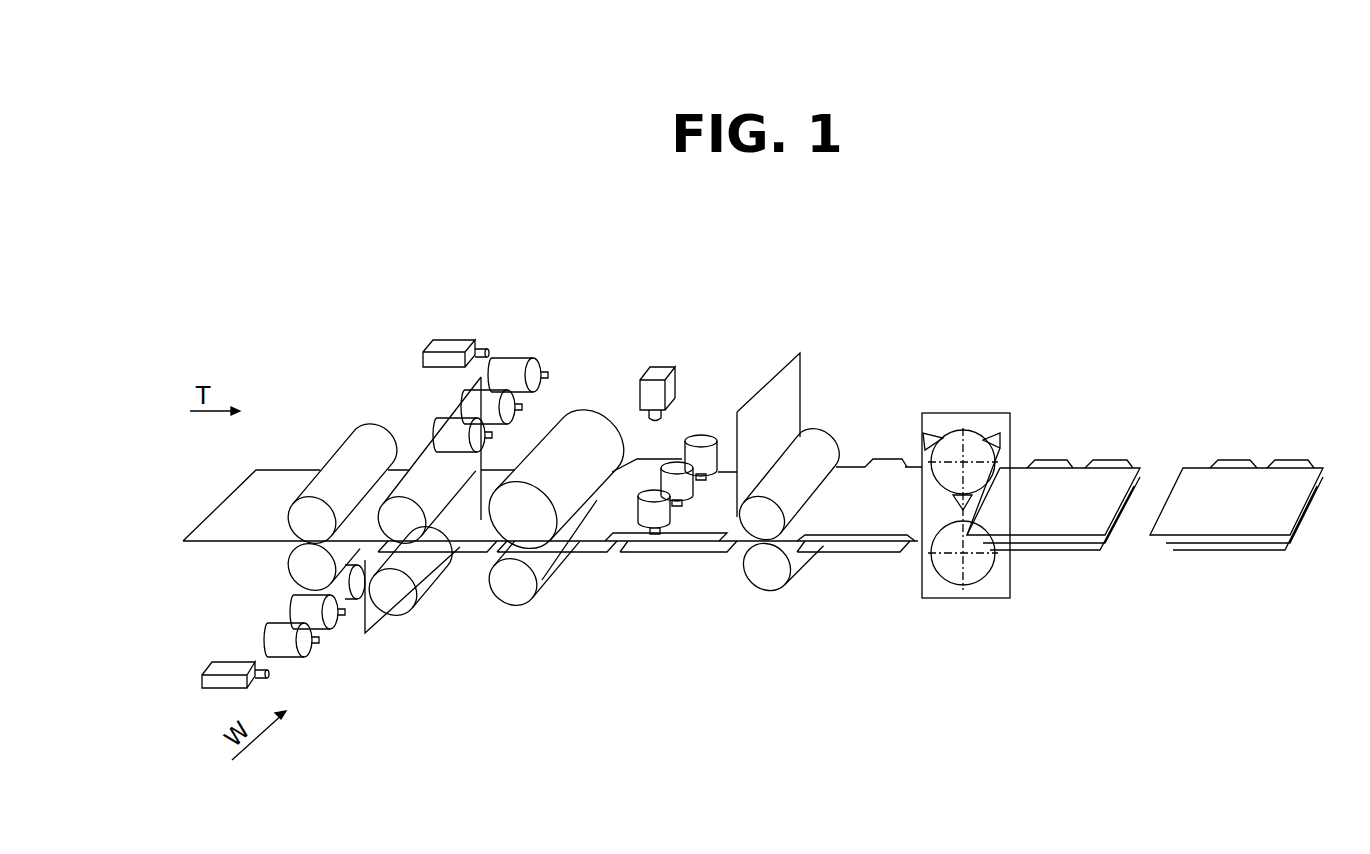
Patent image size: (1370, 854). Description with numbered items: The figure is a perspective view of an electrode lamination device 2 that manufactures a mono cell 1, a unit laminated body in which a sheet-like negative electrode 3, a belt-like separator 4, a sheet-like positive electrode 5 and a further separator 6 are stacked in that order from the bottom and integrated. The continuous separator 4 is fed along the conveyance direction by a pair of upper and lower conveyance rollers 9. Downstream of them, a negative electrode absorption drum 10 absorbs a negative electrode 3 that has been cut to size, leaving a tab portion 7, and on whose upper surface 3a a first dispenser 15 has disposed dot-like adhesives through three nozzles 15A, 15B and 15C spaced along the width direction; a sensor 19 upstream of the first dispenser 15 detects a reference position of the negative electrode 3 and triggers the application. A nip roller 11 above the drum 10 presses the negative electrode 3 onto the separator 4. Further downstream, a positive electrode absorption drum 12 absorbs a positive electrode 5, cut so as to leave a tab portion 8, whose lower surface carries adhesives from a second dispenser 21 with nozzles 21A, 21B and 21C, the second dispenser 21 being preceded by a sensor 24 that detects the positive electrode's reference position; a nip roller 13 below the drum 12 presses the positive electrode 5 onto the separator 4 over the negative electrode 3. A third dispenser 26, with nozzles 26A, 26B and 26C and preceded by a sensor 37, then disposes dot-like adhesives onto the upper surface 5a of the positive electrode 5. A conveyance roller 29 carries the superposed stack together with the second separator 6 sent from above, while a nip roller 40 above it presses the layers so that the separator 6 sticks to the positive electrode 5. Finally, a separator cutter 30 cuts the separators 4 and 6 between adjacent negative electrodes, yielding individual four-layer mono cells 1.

The mono cell 1 is at (1367, 655).
The electrode lamination device 2 is at (188, 288).
The negative electrode 3 is at (370, 633).
The upper surface of negative electrode 3a is at (462, 556).
The separator 4 is at (233, 510).
The positive electrode 5 is at (547, 418).
The upper surface of positive electrode 5a is at (613, 538).
The separator 6 is at (808, 368).
The tab portion 7 is at (886, 458).
The tab portion 8 is at (643, 462).
The conveyance rollers 9 is at (307, 567).
The negative electrode absorption drum 10 is at (434, 597).
The nip roller 11 is at (395, 500).
The positive electrode absorption drum 12 is at (562, 450).
The nip roller 13 is at (520, 592).
The first dispenser 15 is at (248, 611).
The nozzle 15A is at (278, 640).
The nozzle 15B is at (308, 612).
The nozzle 15C is at (300, 573).
The sensor 19 is at (217, 688).
The second dispenser 21 is at (419, 386).
The nozzle 21A is at (450, 433).
The nozzle 21B is at (477, 408).
The nozzle 21C is at (500, 380).
The sensor 24 is at (450, 340).
The third dispenser 26 is at (703, 382).
The nozzle 26A is at (654, 492).
The nozzle 26B is at (677, 464).
The nozzle 26C is at (701, 437).
The conveyance roller 29 is at (772, 578).
The separator cutter 30 is at (965, 413).
The sensor 37 is at (652, 368).
The nip roller 40 is at (815, 440).